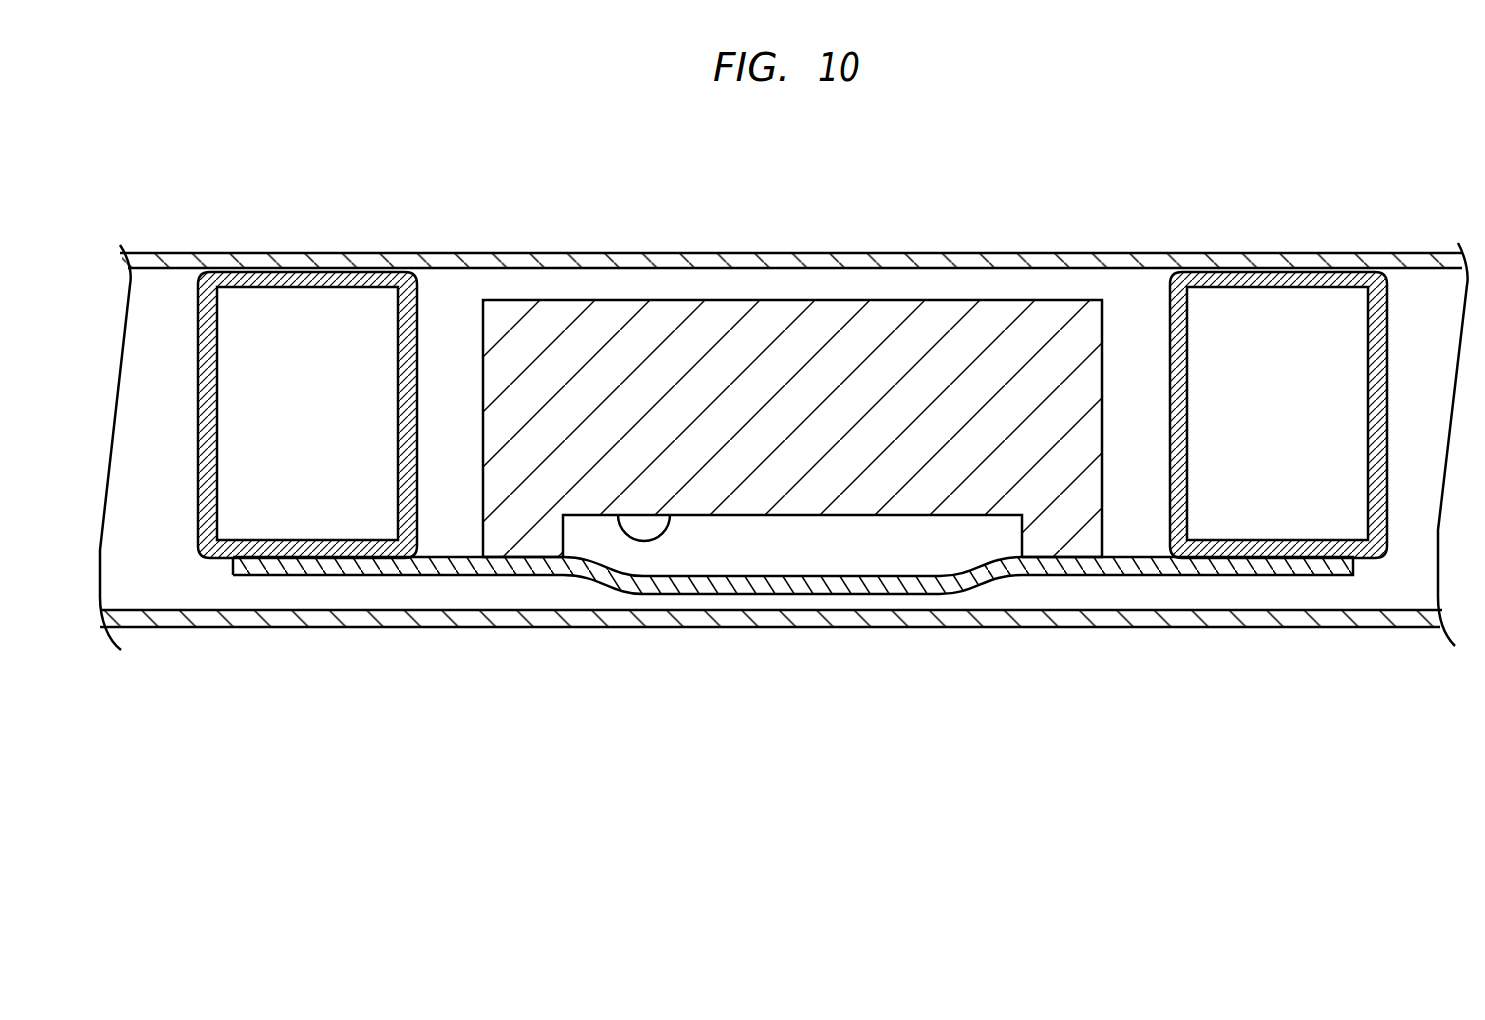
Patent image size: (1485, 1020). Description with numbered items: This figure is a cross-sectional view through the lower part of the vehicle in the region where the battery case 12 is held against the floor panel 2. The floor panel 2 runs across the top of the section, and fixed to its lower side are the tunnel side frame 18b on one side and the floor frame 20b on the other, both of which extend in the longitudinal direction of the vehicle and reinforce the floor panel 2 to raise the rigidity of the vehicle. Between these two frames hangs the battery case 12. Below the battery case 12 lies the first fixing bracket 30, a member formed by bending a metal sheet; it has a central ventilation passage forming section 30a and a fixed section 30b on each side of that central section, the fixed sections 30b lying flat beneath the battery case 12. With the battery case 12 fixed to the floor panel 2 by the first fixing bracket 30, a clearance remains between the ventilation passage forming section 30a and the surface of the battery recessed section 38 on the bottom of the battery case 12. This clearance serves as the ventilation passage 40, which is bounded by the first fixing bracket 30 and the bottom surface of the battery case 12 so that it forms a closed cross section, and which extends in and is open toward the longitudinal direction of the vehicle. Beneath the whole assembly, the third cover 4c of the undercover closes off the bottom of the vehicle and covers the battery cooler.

The floor panel 2 is at (336, 252).
The third cover 4c is at (500, 627).
The battery case 12 is at (1047, 300).
The tunnel side frame 18b is at (197, 336).
The floor frame 20b is at (1387, 337).
The first fixing bracket 30 is at (793, 659).
The ventilation passage forming section 30a is at (898, 594).
The fixed section 30b is at (298, 575).
The battery recessed section 38 is at (620, 521).
The ventilation passage 40 is at (820, 563).